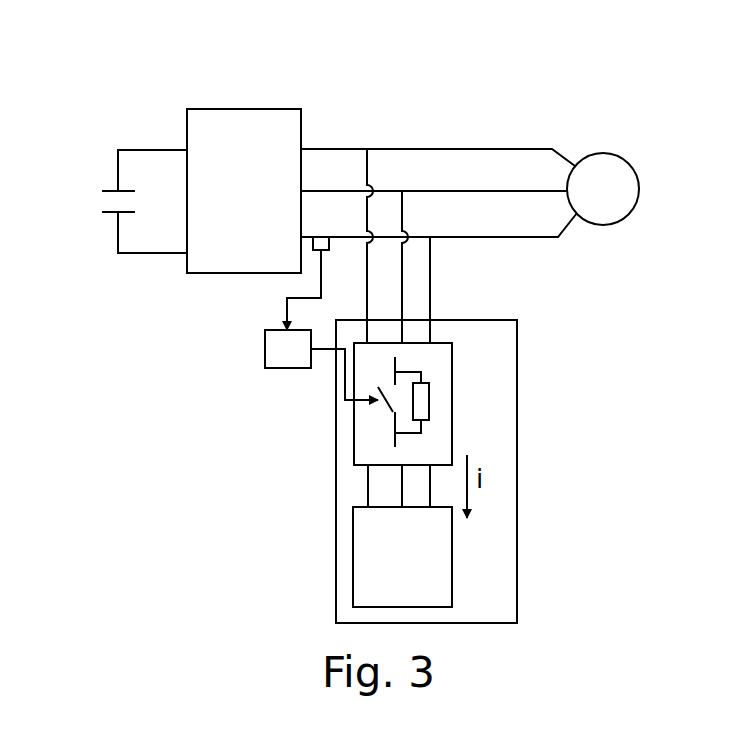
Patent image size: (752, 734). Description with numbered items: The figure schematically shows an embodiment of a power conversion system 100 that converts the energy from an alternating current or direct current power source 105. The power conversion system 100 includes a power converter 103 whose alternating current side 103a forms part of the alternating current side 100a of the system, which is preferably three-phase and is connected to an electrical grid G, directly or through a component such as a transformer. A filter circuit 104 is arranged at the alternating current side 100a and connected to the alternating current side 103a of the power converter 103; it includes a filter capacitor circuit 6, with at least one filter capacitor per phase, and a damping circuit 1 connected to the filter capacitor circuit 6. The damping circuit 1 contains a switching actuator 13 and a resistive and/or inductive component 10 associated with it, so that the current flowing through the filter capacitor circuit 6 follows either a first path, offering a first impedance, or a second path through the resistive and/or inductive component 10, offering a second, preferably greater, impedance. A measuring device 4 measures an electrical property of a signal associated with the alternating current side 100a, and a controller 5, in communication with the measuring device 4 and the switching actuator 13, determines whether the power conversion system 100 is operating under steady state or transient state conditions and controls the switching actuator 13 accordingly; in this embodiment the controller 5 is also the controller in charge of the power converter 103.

The power conversion system 100 is at (112, 72).
The alternating current side 100a is at (438, 140).
The power converter 103 is at (203, 263).
The alternating current side of the power converter 103a is at (315, 143).
The power source 105 is at (112, 186).
The measuring device 4 is at (322, 237).
The controller 5 is at (277, 358).
The filter circuit 104 is at (336, 555).
The damping circuit 1 is at (440, 357).
The switching actuator 13 is at (378, 410).
The resistive and/or inductive component 10 is at (423, 400).
The filter capacitor circuit 6 is at (440, 568).
The electrical grid G is at (620, 193).